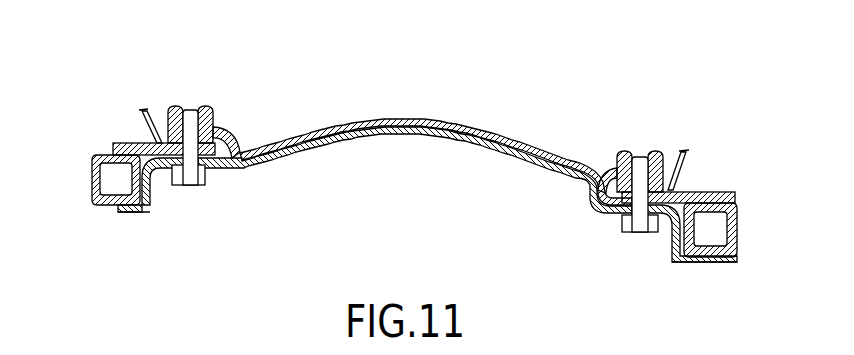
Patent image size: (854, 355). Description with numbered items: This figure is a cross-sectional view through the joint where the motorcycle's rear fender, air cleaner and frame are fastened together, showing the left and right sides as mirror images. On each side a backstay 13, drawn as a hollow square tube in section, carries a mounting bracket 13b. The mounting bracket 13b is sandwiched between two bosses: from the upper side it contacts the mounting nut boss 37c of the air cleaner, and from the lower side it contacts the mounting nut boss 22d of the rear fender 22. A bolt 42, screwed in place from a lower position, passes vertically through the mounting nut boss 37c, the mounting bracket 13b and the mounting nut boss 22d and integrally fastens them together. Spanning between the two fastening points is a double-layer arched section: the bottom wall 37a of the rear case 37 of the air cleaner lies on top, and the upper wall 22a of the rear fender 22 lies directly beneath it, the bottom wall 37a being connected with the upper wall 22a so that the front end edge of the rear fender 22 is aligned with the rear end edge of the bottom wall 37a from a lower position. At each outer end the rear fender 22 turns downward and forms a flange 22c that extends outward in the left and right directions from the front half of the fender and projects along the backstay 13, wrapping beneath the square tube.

The backstay 13 is at (90, 181).
The mounting bracket 13b is at (120, 144).
The rear fender 22 is at (440, 217).
The upper wall 22a is at (447, 140).
The flange 22c is at (118, 212).
The mounting nut boss 22d is at (212, 170).
The rear case 37 is at (414, 115).
The bottom wall 37a is at (448, 120).
The mounting nut boss 37c is at (214, 124).
The bolt 42 is at (194, 188).